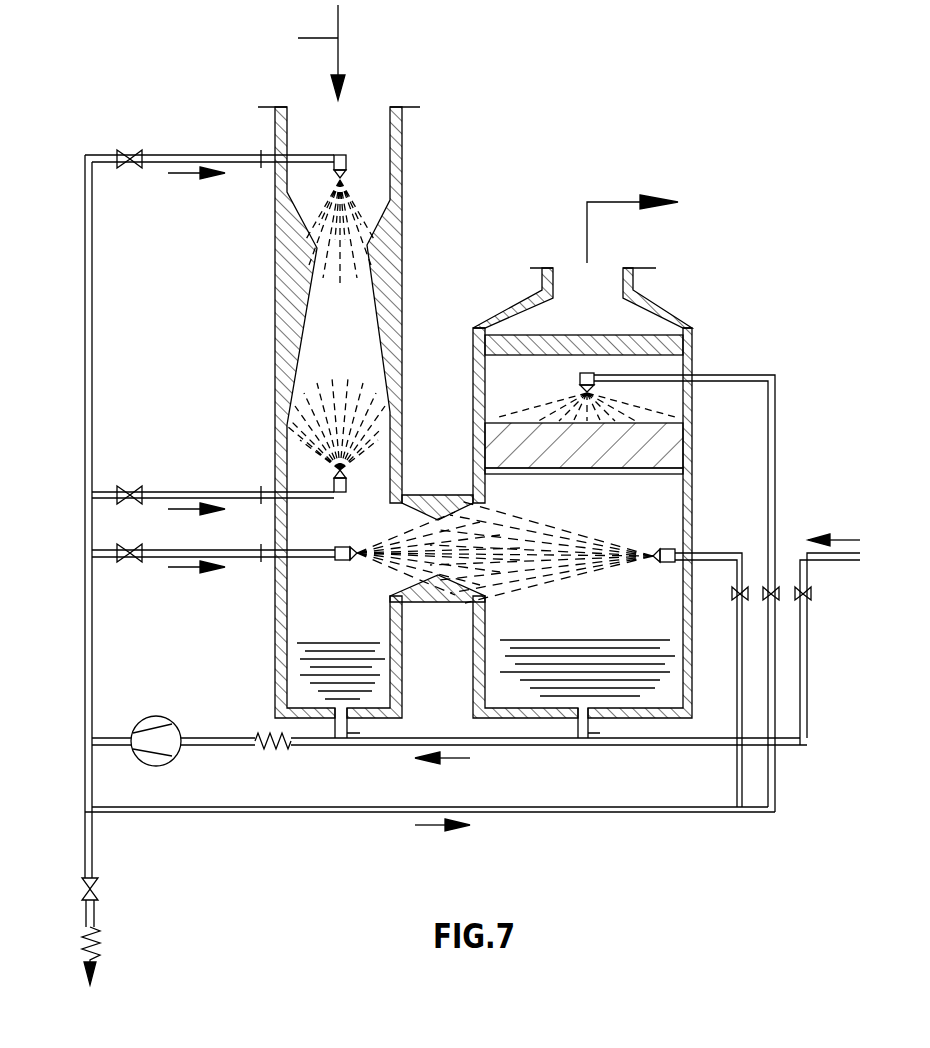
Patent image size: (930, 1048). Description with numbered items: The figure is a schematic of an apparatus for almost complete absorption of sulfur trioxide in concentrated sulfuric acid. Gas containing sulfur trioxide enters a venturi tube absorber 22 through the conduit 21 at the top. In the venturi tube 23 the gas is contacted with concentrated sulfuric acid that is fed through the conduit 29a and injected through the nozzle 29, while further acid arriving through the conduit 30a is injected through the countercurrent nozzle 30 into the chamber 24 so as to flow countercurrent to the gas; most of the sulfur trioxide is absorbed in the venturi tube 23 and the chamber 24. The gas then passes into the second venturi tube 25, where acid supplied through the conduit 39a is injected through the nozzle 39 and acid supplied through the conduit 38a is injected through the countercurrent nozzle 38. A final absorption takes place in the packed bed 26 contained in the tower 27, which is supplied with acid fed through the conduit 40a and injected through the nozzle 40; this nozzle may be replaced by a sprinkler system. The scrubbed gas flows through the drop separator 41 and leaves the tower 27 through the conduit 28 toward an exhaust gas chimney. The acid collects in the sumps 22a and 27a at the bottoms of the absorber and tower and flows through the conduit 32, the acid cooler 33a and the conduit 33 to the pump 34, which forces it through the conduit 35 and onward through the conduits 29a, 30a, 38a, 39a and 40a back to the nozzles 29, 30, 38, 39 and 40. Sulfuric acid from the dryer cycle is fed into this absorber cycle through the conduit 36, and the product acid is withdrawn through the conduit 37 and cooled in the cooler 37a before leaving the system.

The conduit 21 is at (301, 52).
The absorber 22 is at (403, 142).
The sump 22a is at (375, 655).
The venturi tube 23 is at (362, 193).
The chamber 24 is at (365, 440).
The venturi tube 25 is at (398, 548).
The drop separator 26 is at (673, 447).
The tower 27 is at (695, 488).
The sump 27a is at (665, 660).
The conduit 28 is at (593, 200).
The nozzle 29 is at (348, 165).
The conduit 29a is at (170, 160).
The countercurrent nozzle 30 is at (348, 495).
The conduit 30a is at (168, 493).
The conduit 32 is at (592, 732).
The conduit 33 is at (248, 746).
The cooler 33a is at (280, 748).
The pump 34 is at (167, 733).
The conduit 35 is at (101, 748).
The conduit 36 is at (812, 568).
The conduit 37 is at (98, 908).
The cooler 37a is at (100, 940).
The countercurrent nozzle 38 is at (663, 565).
The conduit 38a is at (713, 553).
The nozzle 39 is at (345, 563).
The conduit 39a is at (170, 552).
The nozzle 40 is at (578, 381).
The conduit 40a is at (776, 487).
The drop separator 41 is at (680, 345).